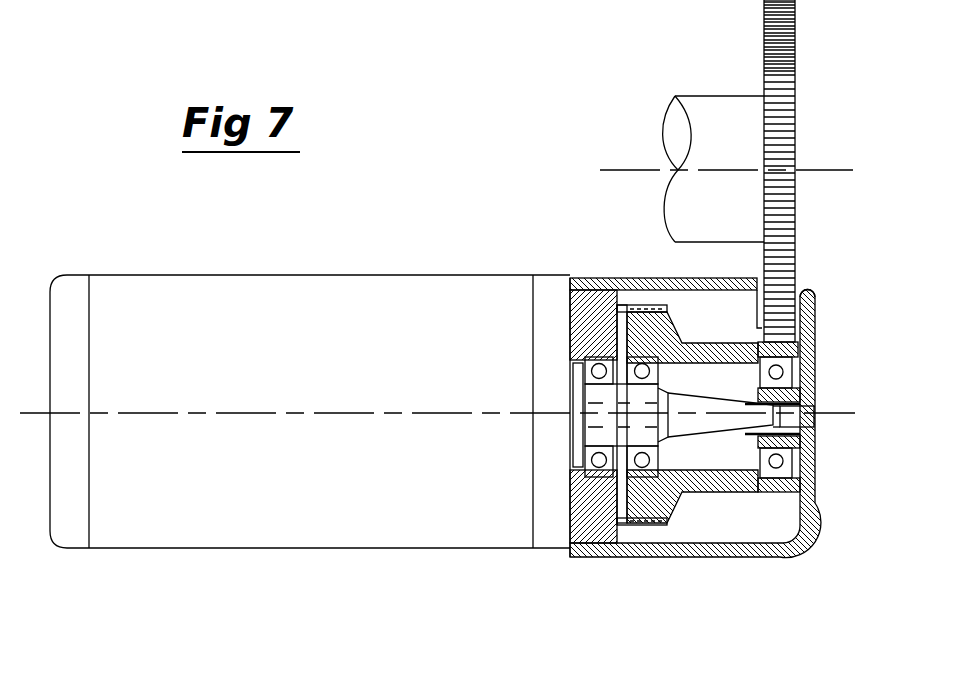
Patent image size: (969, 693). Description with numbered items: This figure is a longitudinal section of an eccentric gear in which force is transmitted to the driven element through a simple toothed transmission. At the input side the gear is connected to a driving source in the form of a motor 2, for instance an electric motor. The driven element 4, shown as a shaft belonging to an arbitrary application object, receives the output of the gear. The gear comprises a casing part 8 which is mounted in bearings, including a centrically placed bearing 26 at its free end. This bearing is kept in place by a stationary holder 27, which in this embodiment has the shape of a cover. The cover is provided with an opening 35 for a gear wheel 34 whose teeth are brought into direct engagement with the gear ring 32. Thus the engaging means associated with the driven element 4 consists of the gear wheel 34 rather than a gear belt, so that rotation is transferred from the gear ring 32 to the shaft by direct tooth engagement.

The motor 2 is at (431, 290).
The driven element 4 is at (705, 110).
The casing part 8 is at (702, 352).
The bearing 26 is at (788, 367).
The stationary holder 27 is at (720, 553).
The gear ring 32 is at (787, 490).
The gear wheel 34 is at (785, 70).
The opening 35 is at (803, 290).